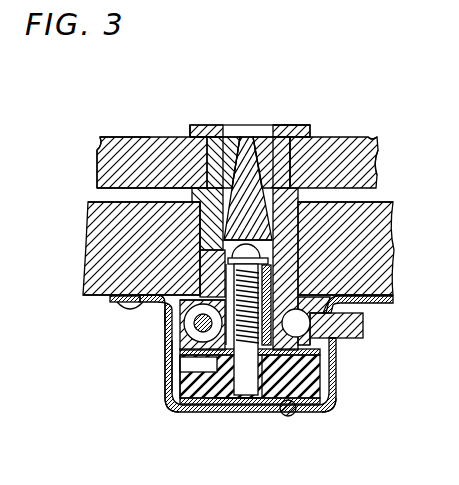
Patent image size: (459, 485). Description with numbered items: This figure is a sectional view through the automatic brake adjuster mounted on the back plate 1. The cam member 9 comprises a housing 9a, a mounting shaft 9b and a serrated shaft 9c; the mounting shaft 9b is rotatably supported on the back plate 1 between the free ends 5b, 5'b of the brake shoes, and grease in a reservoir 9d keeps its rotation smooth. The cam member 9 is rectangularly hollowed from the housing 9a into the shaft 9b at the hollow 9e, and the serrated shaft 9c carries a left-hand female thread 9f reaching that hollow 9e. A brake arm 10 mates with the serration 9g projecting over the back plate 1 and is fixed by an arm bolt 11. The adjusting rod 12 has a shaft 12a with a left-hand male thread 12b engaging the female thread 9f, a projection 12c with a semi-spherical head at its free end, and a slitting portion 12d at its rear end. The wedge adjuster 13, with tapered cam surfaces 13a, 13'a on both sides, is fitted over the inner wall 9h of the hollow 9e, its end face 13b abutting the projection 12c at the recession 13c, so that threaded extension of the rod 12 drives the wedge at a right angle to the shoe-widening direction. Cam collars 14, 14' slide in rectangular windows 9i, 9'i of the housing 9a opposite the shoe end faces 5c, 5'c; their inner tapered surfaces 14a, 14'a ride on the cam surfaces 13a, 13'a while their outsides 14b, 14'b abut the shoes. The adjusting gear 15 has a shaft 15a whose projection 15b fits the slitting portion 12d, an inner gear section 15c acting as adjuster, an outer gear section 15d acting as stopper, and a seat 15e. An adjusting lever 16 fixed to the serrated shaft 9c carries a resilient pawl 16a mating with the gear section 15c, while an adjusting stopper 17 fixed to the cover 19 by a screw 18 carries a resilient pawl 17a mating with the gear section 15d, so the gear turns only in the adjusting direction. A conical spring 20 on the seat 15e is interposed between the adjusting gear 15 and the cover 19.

The back plate 1 is at (88, 205).
The free end of brake shoe 5b is at (132, 140).
The end face of brake shoe 5c is at (188, 128).
The free end of brake shoe 5'b is at (334, 139).
The end face of brake shoe 5'c is at (302, 91).
The cam member 9 is at (265, 203).
The housing 9a is at (191, 127).
The mounting shaft 9b is at (110, 218).
The serrated shaft 9c is at (173, 367).
The reservoir 9d is at (392, 233).
The hollow 9e is at (377, 160).
The female thread 9f is at (390, 285).
The serration 9g is at (165, 318).
The inner wall 9h is at (393, 205).
The rectangular window 9i is at (103, 150).
The rectangular window 9'i is at (315, 132).
The brake arm 10 is at (362, 328).
The arm bolt 11 is at (185, 335).
The adjusting rod 12 is at (158, 298).
The shaft 12a is at (100, 288).
The left-hand male thread 12b is at (165, 332).
The projection 12c is at (393, 258).
The slitting portion 12d is at (170, 398).
The wedge adjuster 13 is at (217, 150).
The tapered cam surface 13a is at (103, 140).
The end face 13b is at (150, 244).
The recession 13c is at (160, 268).
The tapered cam surface 13'a is at (255, 109).
The cam collar 14 is at (152, 136).
The inner tapered surface 14a is at (200, 128).
The outside of collar 14b is at (98, 180).
The cam collar 14' is at (257, 143).
The inner tapered surface 14'a is at (246, 122).
The outside of collar 14'b is at (394, 113).
The adjusting gear 15 is at (220, 400).
The shaft 15a is at (262, 400).
The projection 15b is at (252, 396).
The gear section 15c is at (182, 377).
The gear section 15d is at (168, 410).
The seat 15e is at (237, 410).
The adjusting lever 16 is at (318, 353).
The resilient pawl 16a is at (327, 363).
The adjusting stopper 17 is at (198, 413).
The resilient pawl 17a is at (328, 407).
The screw 18 is at (118, 302).
The cover 19 is at (186, 407).
The conical spring 20 is at (290, 416).